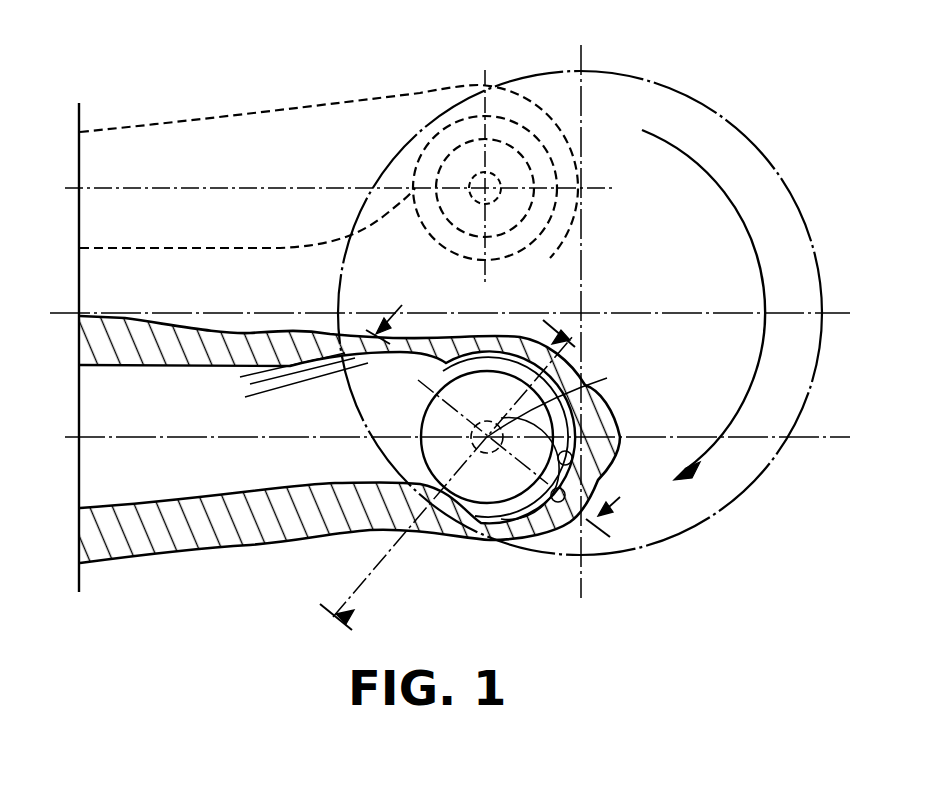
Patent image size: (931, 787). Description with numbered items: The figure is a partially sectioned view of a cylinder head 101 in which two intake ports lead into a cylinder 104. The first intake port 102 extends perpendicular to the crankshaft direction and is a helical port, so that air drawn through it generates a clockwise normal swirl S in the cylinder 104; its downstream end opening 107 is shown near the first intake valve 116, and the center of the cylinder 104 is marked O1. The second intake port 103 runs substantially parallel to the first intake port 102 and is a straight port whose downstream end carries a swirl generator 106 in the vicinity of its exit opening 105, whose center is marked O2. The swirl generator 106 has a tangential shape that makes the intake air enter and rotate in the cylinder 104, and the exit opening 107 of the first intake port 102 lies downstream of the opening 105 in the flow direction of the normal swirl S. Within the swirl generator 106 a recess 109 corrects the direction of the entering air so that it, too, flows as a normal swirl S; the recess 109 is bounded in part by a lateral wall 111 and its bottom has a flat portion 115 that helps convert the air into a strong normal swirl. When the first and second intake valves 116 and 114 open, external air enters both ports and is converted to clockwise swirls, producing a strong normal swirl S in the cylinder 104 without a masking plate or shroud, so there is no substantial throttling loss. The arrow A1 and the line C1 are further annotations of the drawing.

The cylinder head 101 is at (280, 560).
The first intake port 102 is at (215, 132).
The second intake port 103 is at (195, 470).
The cylinder 104 is at (663, 508).
The downstream end opening of the second intake port 105 is at (503, 485).
The swirl generator 106 is at (407, 449).
The downstream end opening of the first intake port 107 is at (508, 157).
The recess 109 is at (575, 540).
The lateral wall 111 is at (614, 424).
The second intake valve 114 is at (596, 390).
The flat portion 115 is at (532, 540).
The first intake valve 116 is at (475, 172).
The normal swirl S is at (733, 200).
The force direction A1 is at (507, 407).
The center line C1 is at (427, 468).
The center of the cylinder O1 is at (586, 310).
The center of the second intake port opening O2 is at (485, 442).